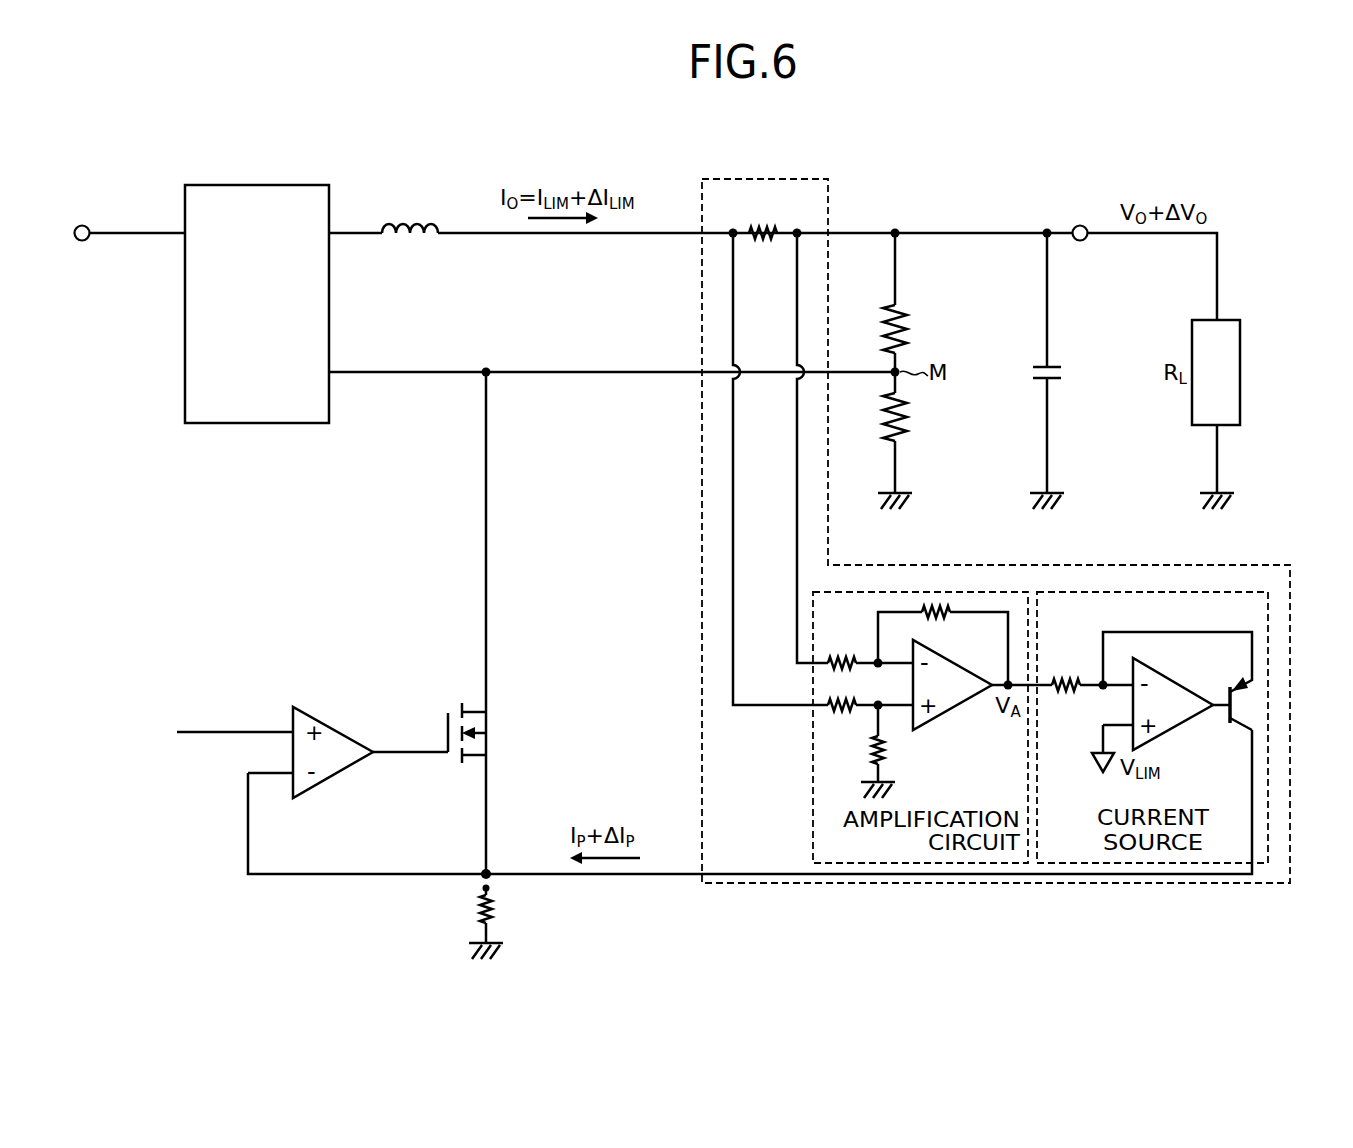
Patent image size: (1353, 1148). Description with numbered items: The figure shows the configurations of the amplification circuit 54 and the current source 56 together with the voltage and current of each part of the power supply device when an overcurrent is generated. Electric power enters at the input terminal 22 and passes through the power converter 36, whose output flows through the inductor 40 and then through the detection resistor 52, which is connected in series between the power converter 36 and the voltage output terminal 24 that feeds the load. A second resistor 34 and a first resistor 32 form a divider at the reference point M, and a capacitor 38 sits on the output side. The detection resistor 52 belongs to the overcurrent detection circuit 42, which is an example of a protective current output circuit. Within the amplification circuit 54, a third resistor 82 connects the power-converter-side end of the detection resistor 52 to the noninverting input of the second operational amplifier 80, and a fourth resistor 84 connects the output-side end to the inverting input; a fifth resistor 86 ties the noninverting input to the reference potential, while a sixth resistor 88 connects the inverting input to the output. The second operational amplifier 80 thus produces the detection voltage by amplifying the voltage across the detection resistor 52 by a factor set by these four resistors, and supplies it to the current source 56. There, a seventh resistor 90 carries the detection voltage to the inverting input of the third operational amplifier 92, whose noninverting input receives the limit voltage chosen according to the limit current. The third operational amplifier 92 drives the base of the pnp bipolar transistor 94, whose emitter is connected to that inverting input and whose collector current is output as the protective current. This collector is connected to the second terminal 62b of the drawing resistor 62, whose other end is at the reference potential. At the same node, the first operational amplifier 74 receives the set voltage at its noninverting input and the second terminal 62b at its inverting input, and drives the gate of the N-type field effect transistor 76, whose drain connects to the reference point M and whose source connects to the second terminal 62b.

The input terminal 22 is at (84, 225).
The voltage output terminal 24 is at (1080, 225).
The first resistor 32 is at (897, 441).
The second resistor 34 is at (897, 306).
The power converter 36 is at (258, 185).
The capacitor 38 is at (1065, 377).
The inductor 40 is at (414, 220).
The overcurrent detection circuit 42 is at (720, 178).
The detection resistor 52 is at (796, 228).
The amplification circuit 54 is at (990, 592).
The current source 56 is at (1140, 592).
The drawing resistor 62 is at (478, 925).
The second terminal 62b is at (490, 889).
The first operational amplifier 74 is at (325, 720).
The field effect transistor 76 is at (448, 724).
The second operational amplifier 80 is at (953, 668).
The third resistor 82 is at (828, 710).
The fourth resistor 84 is at (828, 660).
The fifth resistor 86 is at (872, 760).
The sixth resistor 88 is at (935, 602).
The seventh resistor 90 is at (1062, 675).
The third operational amplifier 92 is at (1162, 676).
The bipolar transistor 94 is at (1249, 691).